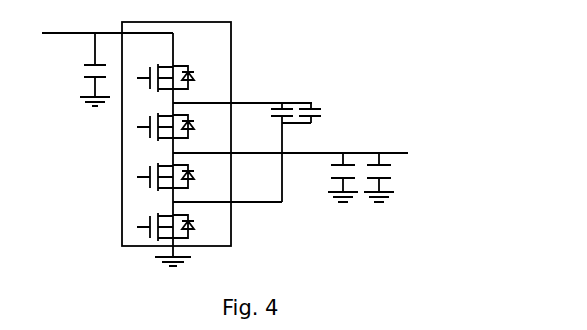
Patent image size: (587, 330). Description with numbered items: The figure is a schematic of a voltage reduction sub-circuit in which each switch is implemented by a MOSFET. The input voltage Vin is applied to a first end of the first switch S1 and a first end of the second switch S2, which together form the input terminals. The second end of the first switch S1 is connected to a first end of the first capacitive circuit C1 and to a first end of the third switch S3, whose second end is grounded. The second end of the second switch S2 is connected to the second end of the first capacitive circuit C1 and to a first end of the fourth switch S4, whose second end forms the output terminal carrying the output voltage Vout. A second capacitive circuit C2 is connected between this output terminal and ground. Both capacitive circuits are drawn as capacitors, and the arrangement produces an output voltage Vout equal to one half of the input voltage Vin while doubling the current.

The first switch S1 is at (182, 78).
The second switch S2 is at (182, 127).
The third switch S3 is at (182, 177).
The fourth switch S4 is at (182, 227).
The first capacitive circuit C1 is at (314, 150).
The second capacitive circuit C2 is at (379, 177).
The input voltage Vin is at (107, 55).
The output voltage Vout is at (310, 156).